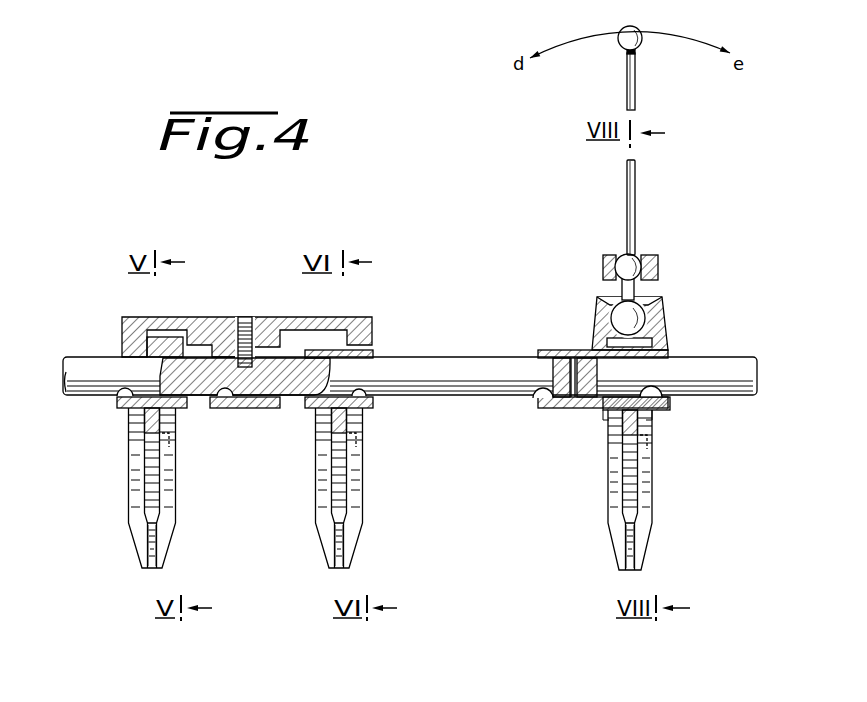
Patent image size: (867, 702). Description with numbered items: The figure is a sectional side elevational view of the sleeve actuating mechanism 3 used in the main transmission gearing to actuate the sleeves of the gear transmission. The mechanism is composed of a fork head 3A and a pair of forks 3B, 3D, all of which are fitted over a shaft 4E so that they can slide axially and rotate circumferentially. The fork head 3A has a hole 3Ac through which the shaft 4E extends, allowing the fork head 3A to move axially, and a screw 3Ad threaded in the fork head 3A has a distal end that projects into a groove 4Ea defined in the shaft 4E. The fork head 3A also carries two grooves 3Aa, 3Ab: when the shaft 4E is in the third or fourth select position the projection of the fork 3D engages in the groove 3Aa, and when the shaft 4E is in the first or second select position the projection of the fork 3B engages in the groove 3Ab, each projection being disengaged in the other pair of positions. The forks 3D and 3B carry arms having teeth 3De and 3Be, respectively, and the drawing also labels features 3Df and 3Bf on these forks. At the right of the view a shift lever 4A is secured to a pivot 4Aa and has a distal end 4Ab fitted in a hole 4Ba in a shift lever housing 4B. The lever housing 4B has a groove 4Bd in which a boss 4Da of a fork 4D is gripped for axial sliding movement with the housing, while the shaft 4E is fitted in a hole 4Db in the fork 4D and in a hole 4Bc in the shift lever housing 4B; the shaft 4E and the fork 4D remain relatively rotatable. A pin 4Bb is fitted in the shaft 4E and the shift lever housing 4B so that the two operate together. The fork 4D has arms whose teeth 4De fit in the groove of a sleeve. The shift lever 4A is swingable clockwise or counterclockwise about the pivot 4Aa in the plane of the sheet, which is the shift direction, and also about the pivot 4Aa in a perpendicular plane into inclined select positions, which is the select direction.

The sleeve actuating mechanism 3 is at (250, 268).
The fork head 3A is at (380, 322).
The groove 3Aa is at (152, 340).
The groove 3Ab is at (320, 340).
The hole 3Ac is at (226, 400).
The screw 3Ad is at (246, 318).
The fork 3B is at (368, 492).
The teeth 3Be is at (342, 550).
The nozzle seal 3Bf is at (365, 407).
The fork 3D is at (182, 491).
The teeth 3De is at (152, 540).
The nozzle seal 3Df is at (122, 398).
The shift lever 4A is at (635, 82).
The pivot 4Aa is at (640, 252).
The distal end 4Ab is at (625, 318).
The shift lever housing 4B is at (553, 412).
The hole 4Ba is at (663, 307).
The pin 4Bb is at (572, 352).
The hole 4Bc is at (540, 410).
The groove 4Bd is at (687, 397).
The fork 4D is at (660, 508).
The boss 4Da is at (608, 412).
The hole 4Db is at (647, 362).
The teeth 4De is at (633, 540).
The shaft 4E is at (418, 365).
The groove 4Ea is at (262, 400).